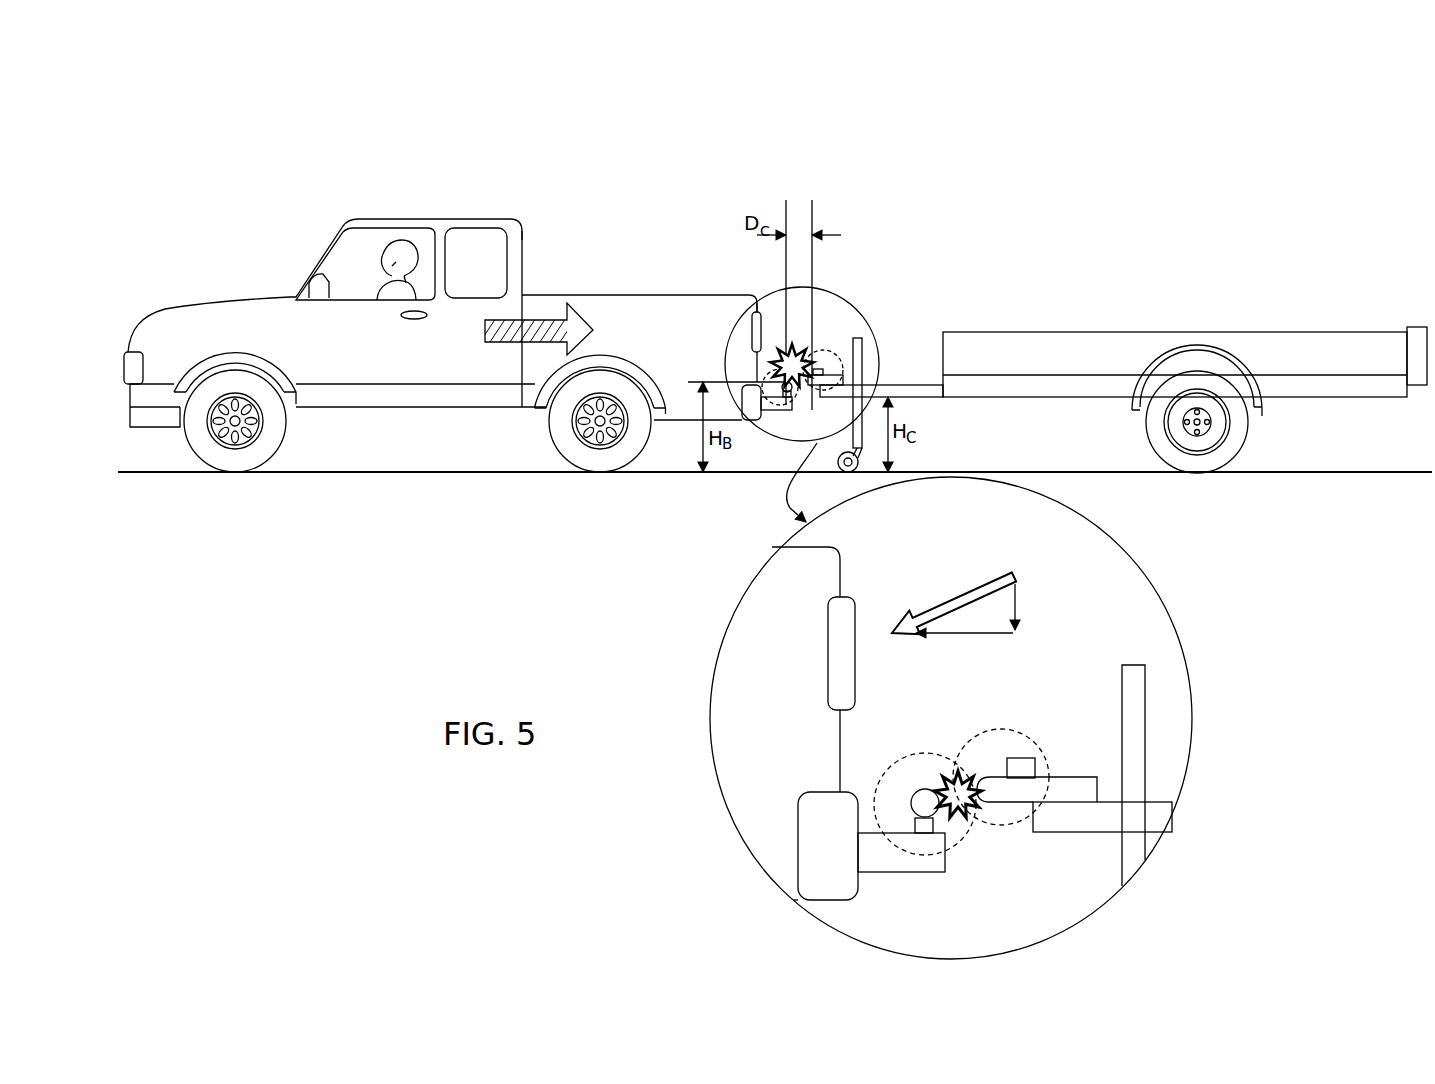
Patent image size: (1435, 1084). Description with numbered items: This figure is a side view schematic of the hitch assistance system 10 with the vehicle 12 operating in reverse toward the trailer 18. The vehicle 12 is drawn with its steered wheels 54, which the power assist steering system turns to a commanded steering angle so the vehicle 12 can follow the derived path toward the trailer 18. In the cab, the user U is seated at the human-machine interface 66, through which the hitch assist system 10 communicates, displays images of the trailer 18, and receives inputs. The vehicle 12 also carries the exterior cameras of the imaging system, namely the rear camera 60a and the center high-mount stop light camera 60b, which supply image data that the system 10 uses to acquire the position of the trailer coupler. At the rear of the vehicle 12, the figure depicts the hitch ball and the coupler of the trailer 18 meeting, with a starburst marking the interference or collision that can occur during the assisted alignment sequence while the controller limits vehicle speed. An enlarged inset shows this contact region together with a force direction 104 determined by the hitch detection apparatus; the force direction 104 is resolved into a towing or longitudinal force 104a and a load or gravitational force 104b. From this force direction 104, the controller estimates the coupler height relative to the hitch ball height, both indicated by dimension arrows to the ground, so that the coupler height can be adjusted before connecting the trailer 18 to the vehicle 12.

The hitch assistance system 10 is at (398, 93).
The vehicle 12 is at (240, 307).
The trailer 18 is at (967, 331).
The steered wheels 54 is at (205, 447).
The rear camera 60a is at (758, 300).
The center high-mount stop light camera 60b is at (522, 237).
The human-machine interface 66 is at (343, 272).
The force direction 104 is at (952, 602).
The longitudinal force 104a is at (971, 636).
The gravitational force 104b is at (1018, 598).
The user U is at (390, 247).